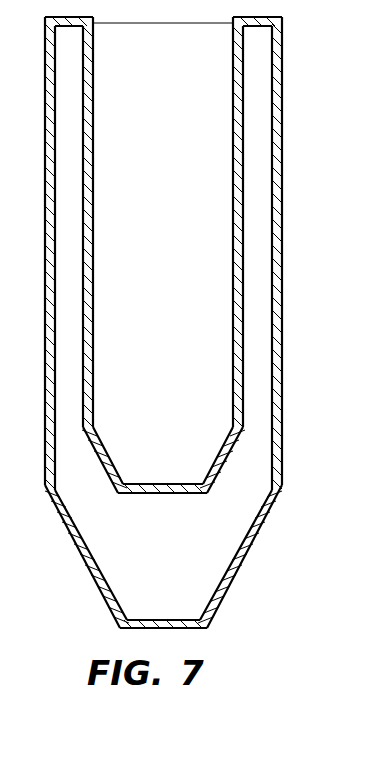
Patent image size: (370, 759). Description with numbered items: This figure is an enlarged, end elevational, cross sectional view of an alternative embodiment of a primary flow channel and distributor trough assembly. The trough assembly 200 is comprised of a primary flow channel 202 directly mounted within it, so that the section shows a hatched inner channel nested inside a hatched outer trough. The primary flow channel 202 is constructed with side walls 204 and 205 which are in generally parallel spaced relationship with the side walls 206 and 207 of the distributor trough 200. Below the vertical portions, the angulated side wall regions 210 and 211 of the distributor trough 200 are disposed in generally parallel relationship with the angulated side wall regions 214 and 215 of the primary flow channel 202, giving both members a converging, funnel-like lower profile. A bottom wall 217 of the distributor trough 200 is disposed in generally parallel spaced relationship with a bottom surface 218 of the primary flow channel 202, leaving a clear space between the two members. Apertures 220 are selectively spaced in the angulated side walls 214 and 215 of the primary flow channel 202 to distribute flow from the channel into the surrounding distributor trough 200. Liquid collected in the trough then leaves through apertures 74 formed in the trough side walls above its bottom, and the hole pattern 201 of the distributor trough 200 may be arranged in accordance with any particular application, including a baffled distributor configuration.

The trough assembly 200 is at (293, 442).
The hole pattern 201 is at (247, 573).
The primary flow channel 202 is at (254, 242).
The side wall 204 is at (243, 191).
The side wall 205 is at (93, 181).
The side wall 206 is at (281, 312).
The side wall 207 is at (52, 472).
The angulated side wall region 210 is at (246, 569).
The angulated side wall region 211 is at (90, 572).
The angulated side wall region 214 is at (215, 463).
The angulated side wall region 215 is at (113, 455).
The bottom wall 217 is at (143, 620).
The bottom surface 218 is at (153, 495).
The apertures 220 is at (111, 472).
The apertures 74 is at (112, 605).